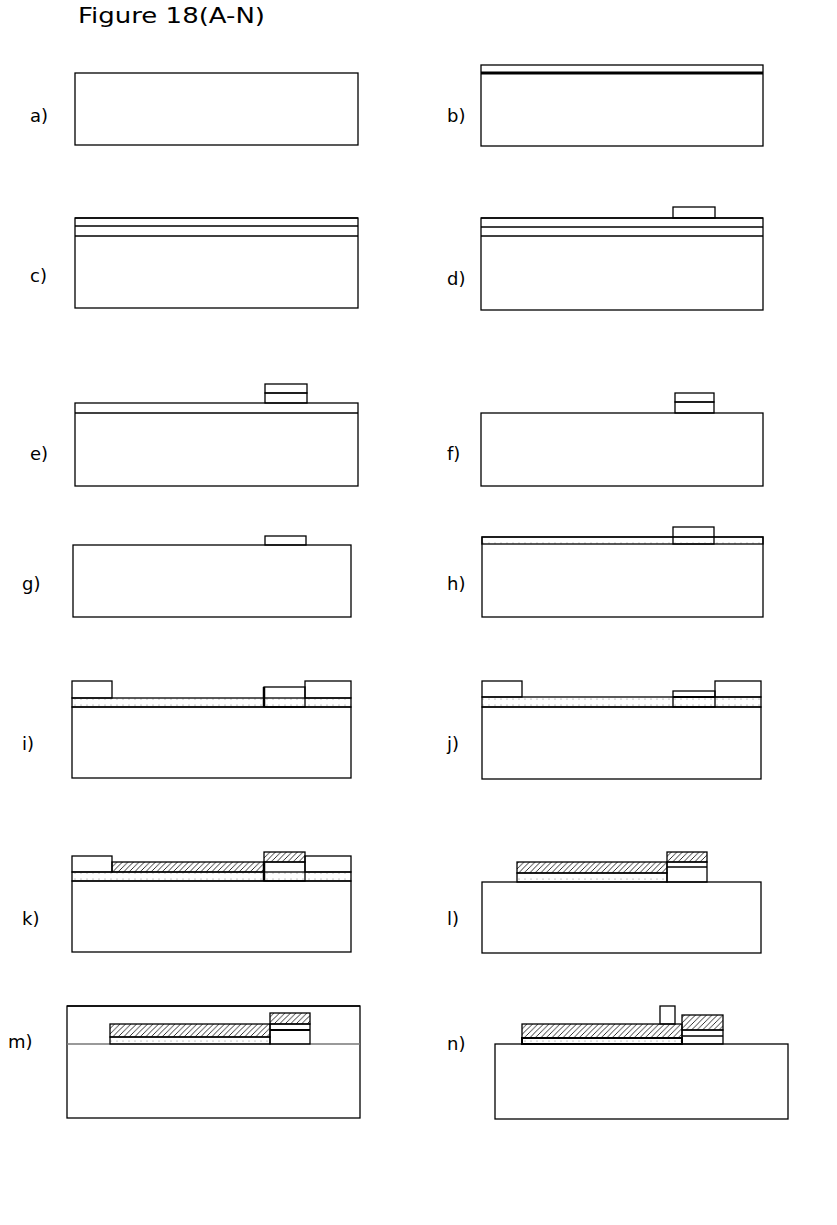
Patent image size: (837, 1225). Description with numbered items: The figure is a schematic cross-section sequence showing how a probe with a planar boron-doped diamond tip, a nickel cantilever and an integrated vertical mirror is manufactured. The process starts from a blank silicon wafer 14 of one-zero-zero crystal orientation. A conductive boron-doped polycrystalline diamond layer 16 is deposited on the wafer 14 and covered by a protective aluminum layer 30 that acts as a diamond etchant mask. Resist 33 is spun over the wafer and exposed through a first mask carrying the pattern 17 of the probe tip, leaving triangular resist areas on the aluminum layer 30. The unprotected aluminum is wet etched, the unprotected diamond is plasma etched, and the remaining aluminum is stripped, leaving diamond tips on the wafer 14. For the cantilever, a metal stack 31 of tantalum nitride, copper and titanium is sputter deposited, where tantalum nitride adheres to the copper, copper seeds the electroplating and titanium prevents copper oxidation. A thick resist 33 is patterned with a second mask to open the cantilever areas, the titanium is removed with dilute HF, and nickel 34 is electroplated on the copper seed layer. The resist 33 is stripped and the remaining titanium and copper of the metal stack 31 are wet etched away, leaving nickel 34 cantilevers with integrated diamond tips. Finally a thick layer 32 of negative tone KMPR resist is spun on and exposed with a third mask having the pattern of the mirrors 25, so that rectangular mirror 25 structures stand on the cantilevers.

The silicon wafer 14 is at (224, 126).
The boron-doped polycrystalline diamond layer 16 is at (753, 70).
The pattern of the probe tip 17 is at (712, 408).
The vertical mirror 25 is at (662, 1010).
The protective aluminum layer 30 is at (143, 223).
The metal stack 31 is at (582, 538).
The thick layer of KMPR resist 32 is at (132, 1007).
The resist 33 is at (687, 215).
The nickel 34 is at (190, 862).